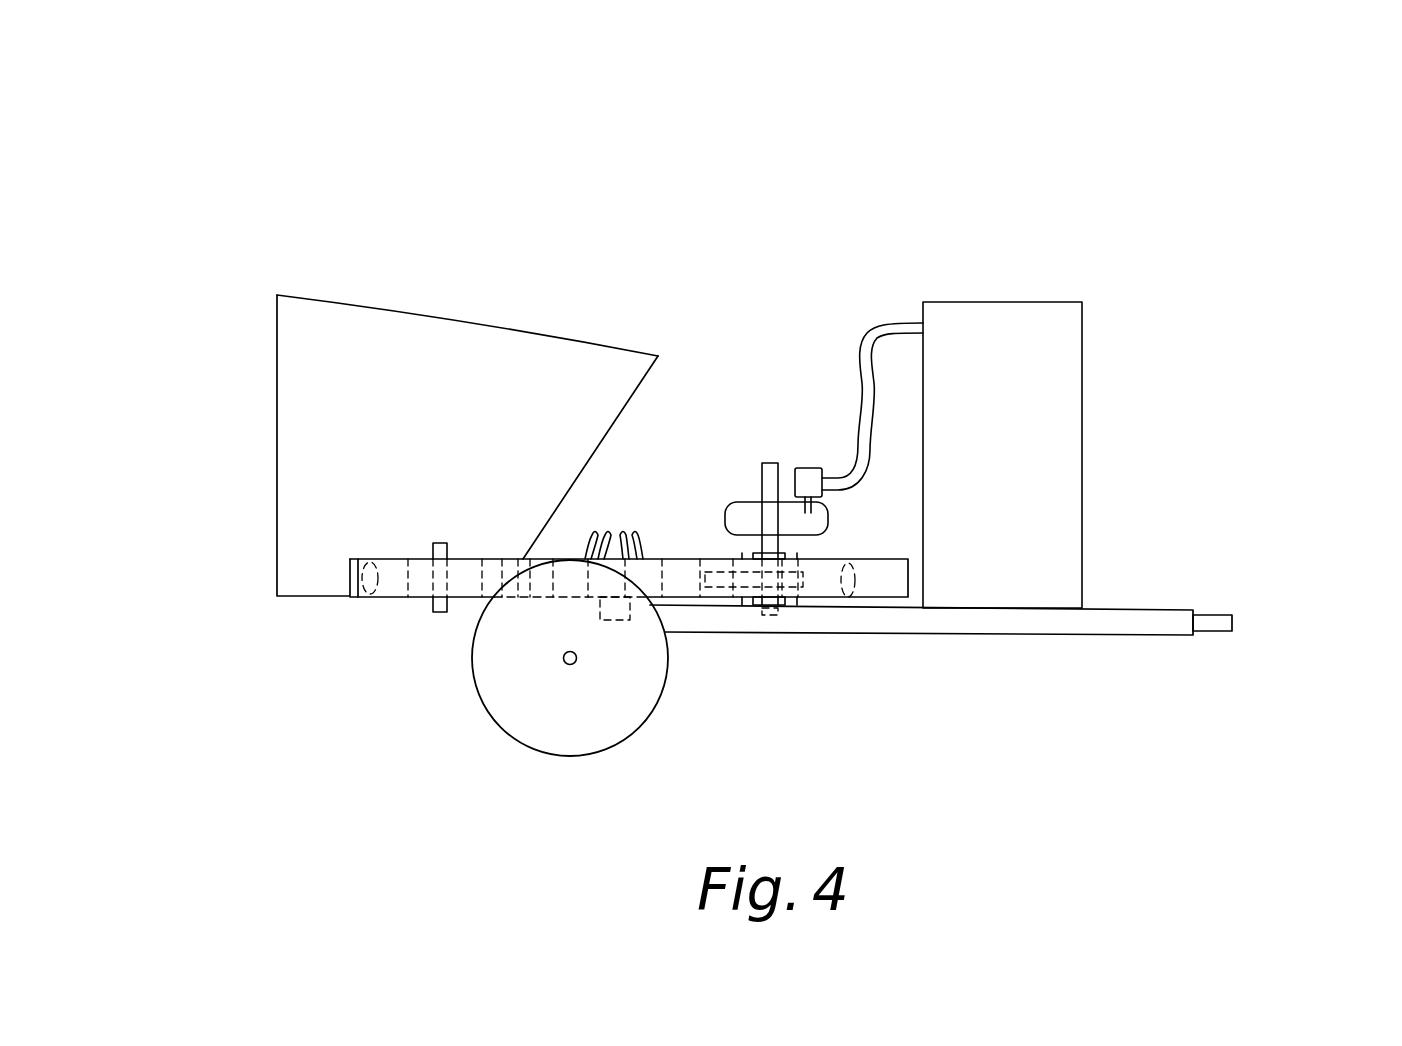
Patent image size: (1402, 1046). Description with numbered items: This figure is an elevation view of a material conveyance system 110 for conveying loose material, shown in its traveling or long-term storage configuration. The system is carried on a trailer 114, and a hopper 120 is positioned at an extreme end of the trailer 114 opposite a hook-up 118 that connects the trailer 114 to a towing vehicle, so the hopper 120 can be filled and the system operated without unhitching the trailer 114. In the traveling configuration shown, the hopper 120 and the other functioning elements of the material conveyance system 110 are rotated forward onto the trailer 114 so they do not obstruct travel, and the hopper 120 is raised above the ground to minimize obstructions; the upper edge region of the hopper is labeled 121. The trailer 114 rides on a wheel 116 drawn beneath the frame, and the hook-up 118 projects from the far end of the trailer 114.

The material conveyance system 110 is at (394, 163).
The trailer 114 is at (1157, 609).
The ground wheel 116 is at (660, 697).
The hook-up 118 is at (1237, 623).
The hopper 120 is at (276, 449).
The hopper top edge 121 is at (504, 328).